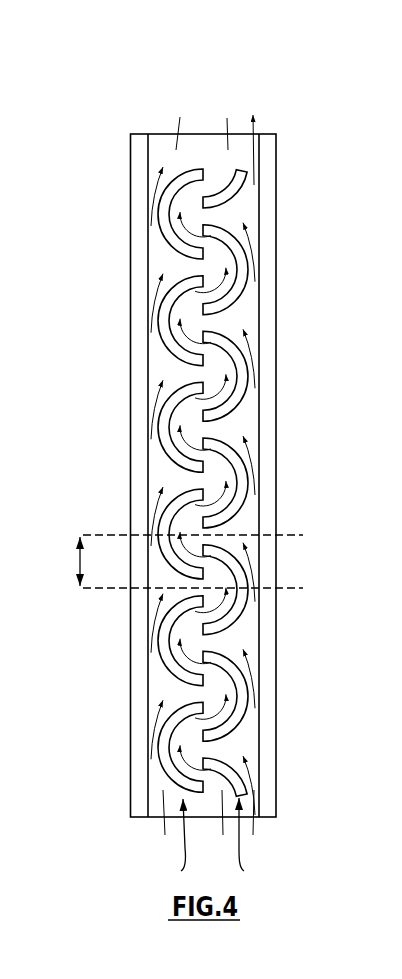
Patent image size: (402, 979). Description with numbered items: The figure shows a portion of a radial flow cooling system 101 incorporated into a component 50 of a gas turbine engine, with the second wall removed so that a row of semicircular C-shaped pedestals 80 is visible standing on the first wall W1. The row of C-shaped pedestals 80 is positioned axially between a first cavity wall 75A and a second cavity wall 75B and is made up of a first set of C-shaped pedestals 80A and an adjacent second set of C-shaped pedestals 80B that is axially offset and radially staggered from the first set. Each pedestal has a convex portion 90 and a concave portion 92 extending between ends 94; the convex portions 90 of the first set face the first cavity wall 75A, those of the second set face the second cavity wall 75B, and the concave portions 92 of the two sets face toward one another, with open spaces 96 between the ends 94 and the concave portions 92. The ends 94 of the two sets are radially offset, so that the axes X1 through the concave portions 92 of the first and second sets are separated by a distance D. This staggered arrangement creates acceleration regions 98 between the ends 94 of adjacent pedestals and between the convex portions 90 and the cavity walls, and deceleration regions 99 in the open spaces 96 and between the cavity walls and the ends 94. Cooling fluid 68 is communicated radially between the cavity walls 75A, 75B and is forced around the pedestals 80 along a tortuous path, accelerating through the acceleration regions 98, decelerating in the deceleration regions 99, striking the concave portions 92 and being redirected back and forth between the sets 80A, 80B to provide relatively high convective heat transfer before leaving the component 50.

The component 50 is at (300, 210).
The cooling fluid 68 is at (181, 115).
The first cavity wall 75A is at (134, 352).
The second cavity wall 75B is at (272, 360).
The C-shaped pedestal 80 is at (257, 181).
The first set of C-shaped pedestals 80A is at (165, 840).
The second set of C-shaped pedestals 80B is at (260, 840).
The convex portion 90 is at (158, 208).
The concave portion 92 is at (236, 168).
The ends 94 is at (181, 210).
The open spaces 96 is at (157, 373).
The acceleration region 98 is at (152, 197).
The deceleration region 99 is at (158, 146).
The cooling system 101 is at (257, 80).
The first wall W1 is at (188, 143).
The axis X1 is at (102, 533).
The distance D is at (77, 560).